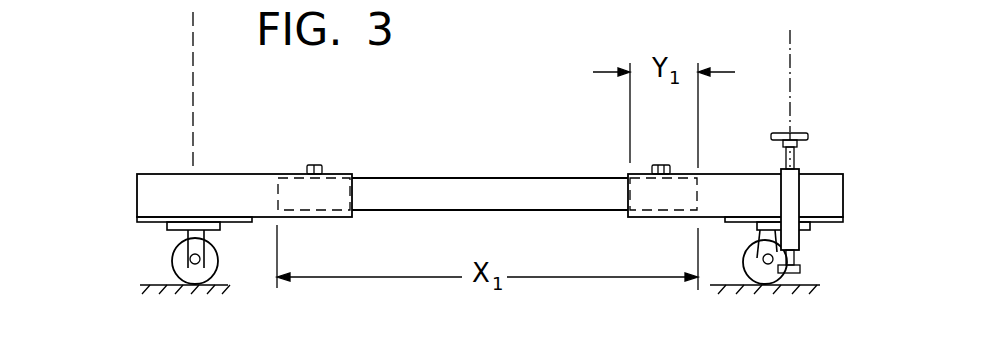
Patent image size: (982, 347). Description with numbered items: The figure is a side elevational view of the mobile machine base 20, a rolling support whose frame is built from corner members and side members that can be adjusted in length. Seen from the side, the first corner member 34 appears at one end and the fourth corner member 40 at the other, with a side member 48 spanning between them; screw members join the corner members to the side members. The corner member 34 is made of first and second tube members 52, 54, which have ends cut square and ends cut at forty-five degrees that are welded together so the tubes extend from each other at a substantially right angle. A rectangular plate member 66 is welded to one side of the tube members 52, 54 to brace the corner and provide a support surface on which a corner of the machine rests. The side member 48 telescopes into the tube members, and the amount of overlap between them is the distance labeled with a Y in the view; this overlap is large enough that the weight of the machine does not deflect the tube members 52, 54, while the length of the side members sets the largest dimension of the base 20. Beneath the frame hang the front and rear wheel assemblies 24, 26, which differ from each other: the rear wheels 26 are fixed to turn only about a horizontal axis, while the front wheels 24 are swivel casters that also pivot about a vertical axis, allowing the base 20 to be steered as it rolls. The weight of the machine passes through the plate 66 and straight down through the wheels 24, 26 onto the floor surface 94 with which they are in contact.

The mobile machine base 20 is at (487, 156).
The front wheel assembly 24 is at (795, 293).
The rear wheel assembly 26 is at (164, 259).
The first corner member 34 is at (128, 182).
The fourth corner member 40 is at (852, 188).
The fourth side member 48 is at (468, 187).
The first tube member 52 is at (253, 184).
The second tube member 54 is at (721, 172).
The rectangular plate member 66 is at (146, 225).
The floor surface 94 is at (229, 286).